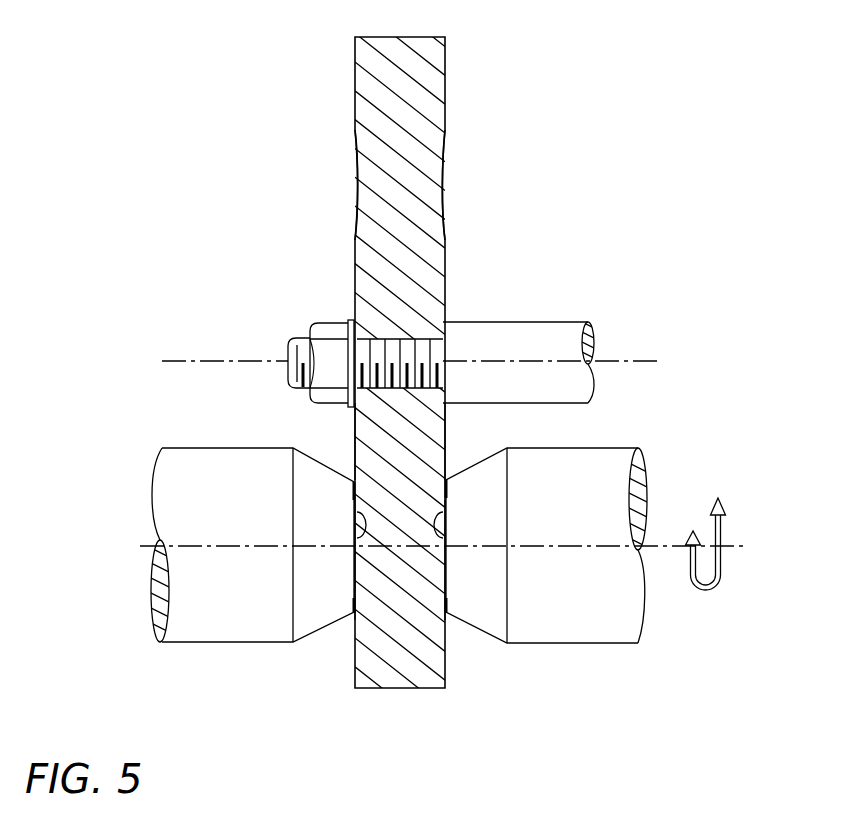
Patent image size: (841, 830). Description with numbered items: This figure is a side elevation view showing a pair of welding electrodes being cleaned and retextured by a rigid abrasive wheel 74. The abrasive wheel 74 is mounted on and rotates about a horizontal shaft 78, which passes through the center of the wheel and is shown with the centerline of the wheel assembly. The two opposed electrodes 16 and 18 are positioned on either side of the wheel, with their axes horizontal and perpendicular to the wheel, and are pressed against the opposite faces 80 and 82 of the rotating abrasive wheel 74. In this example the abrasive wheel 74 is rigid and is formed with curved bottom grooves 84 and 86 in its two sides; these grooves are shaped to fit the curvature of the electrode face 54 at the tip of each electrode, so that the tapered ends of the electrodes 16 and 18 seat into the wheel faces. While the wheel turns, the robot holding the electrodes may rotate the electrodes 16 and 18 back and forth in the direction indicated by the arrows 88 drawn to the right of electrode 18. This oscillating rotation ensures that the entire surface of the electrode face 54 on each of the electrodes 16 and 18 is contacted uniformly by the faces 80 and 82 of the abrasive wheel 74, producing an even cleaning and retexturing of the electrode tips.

The electrode 16 is at (208, 632).
The electrode 18 is at (568, 632).
The electrode face 54 is at (356, 522).
The rigid abrasive wheel 74 is at (404, 670).
The horizontal shaft 78 is at (532, 340).
The face of the abrasive wheel 80 is at (355, 438).
The face of the abrasive wheel 82 is at (445, 438).
The curved bottom groove 84 is at (357, 177).
The curved bottom groove 86 is at (443, 177).
The arrows 88 is at (718, 563).